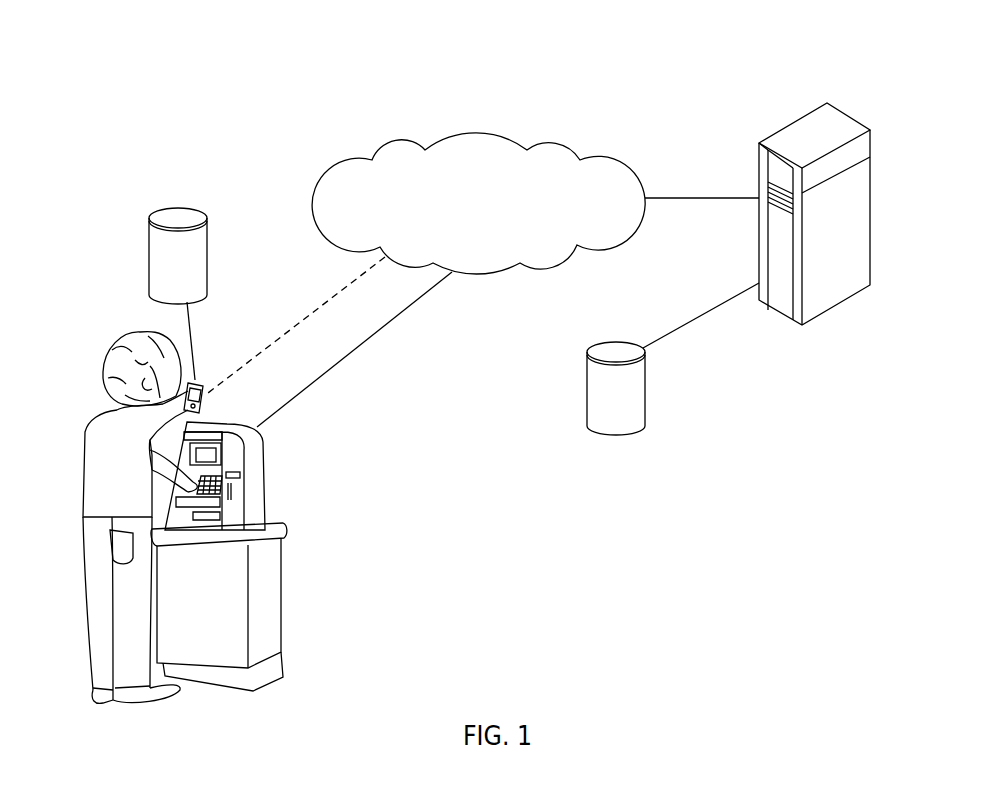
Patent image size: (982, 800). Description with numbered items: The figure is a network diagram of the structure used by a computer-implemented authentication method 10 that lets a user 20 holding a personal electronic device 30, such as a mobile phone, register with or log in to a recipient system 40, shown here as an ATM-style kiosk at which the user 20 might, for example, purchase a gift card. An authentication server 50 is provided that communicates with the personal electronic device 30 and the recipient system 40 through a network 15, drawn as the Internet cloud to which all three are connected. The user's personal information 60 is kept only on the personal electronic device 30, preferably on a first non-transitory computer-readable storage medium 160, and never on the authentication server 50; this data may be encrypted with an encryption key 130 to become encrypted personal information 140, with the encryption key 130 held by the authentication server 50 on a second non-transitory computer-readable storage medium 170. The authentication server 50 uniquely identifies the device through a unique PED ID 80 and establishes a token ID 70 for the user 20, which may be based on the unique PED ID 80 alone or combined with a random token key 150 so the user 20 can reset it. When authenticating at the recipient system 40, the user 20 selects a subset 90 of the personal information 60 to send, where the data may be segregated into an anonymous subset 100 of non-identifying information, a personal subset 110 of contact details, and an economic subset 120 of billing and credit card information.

The authentication method 10 is at (578, 54).
The network 15 is at (405, 157).
The user 20 is at (100, 443).
The personal electronic device 30 is at (205, 400).
The recipient system 40 is at (250, 498).
The authentication server 50 is at (813, 131).
The personal information 60 is at (178, 162).
The token ID 70 is at (178, 256).
The unique PED ID 80 is at (614, 456).
The subset of personal information 90 is at (178, 256).
The anonymous subset 100 is at (178, 256).
The personal subset 110 is at (178, 256).
The economic subset 120 is at (178, 256).
The encryption key 130 is at (616, 388).
The encrypted personal information 140 is at (178, 256).
The random token key 150 is at (616, 388).
The first non-transitory computer-readable storage medium 160 is at (163, 252).
The second non-transitory computer-readable storage medium 170 is at (620, 391).